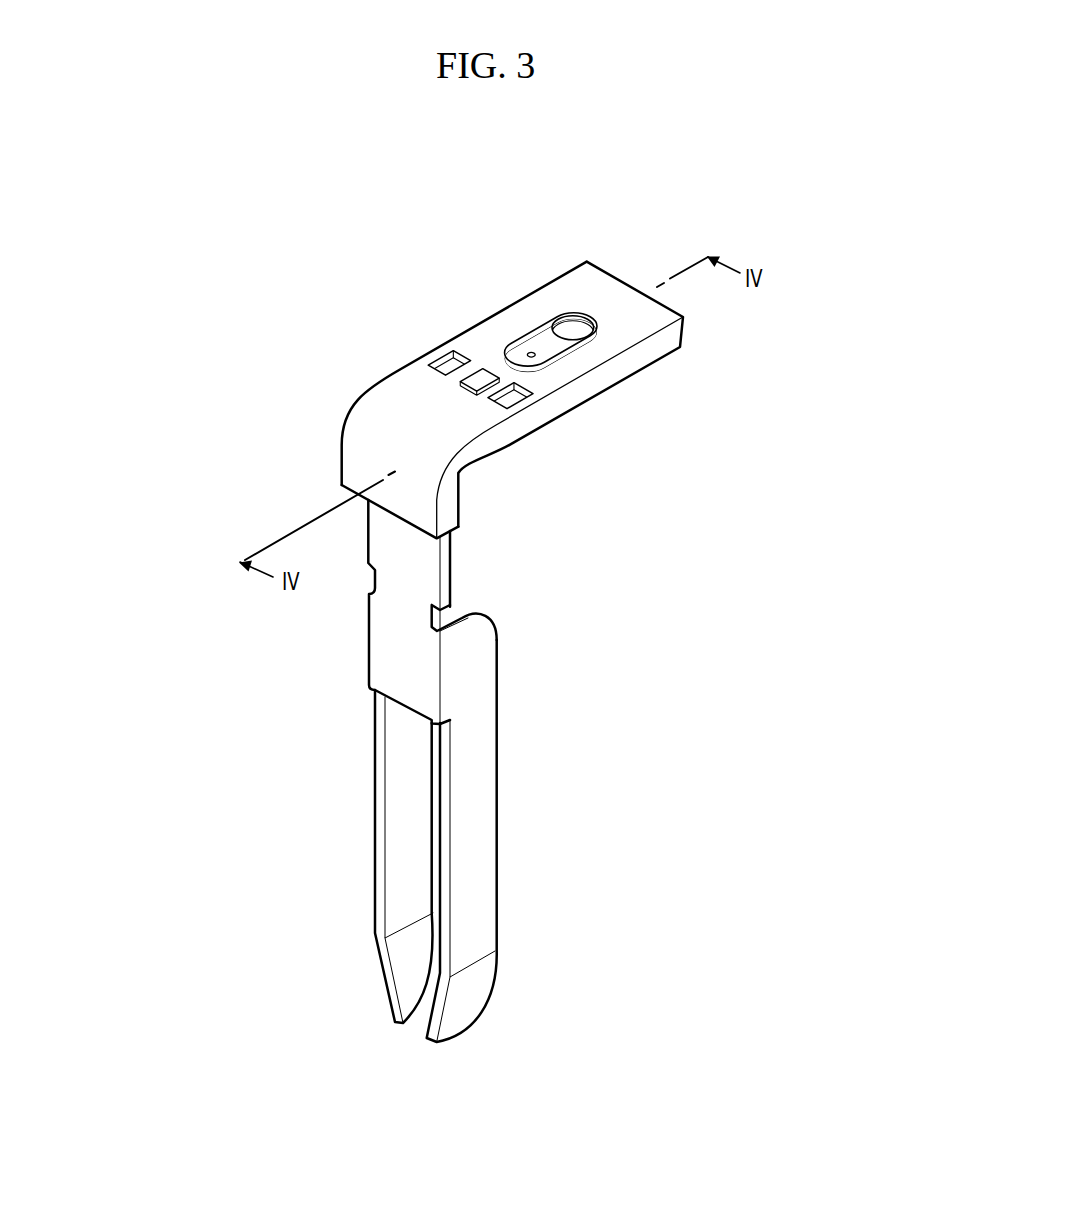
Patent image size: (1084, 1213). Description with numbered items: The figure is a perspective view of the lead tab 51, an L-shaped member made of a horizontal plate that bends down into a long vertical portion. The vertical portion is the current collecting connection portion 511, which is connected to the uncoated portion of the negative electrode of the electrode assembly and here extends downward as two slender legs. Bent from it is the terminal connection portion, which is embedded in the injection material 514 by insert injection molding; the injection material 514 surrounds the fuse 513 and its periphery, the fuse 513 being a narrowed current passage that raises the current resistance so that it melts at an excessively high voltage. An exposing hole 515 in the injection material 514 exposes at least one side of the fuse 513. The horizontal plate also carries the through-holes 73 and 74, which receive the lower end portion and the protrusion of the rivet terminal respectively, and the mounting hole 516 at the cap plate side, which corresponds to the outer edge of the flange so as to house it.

The lead tab 51 is at (484, 167).
The current collecting connection portion 511 is at (446, 563).
The fuse 513 is at (449, 367).
The injection material 514 is at (443, 463).
The exposing hole 515 is at (480, 382).
The mounting hole 516 is at (551, 342).
The through-hole 73 is at (573, 330).
The through-hole 74 is at (531, 355).